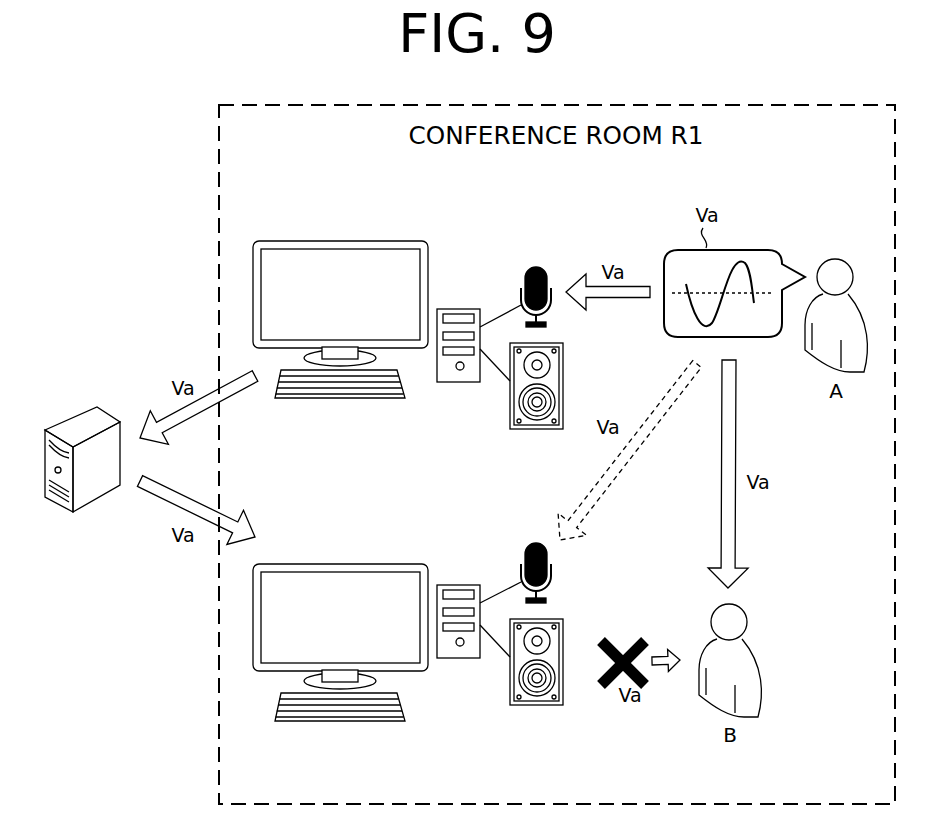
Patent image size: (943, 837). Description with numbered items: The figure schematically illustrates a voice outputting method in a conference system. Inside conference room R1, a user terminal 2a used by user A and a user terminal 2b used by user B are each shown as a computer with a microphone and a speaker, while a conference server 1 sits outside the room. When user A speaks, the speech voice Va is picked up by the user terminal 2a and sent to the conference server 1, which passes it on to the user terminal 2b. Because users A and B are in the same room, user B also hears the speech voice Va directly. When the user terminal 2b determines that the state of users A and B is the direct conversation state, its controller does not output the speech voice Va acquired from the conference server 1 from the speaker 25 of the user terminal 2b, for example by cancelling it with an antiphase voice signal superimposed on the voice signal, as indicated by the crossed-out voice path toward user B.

The conference server 1 is at (70, 415).
The user terminal 2a is at (370, 222).
The user terminal 2b is at (386, 522).
The speaker 25 is at (533, 705).